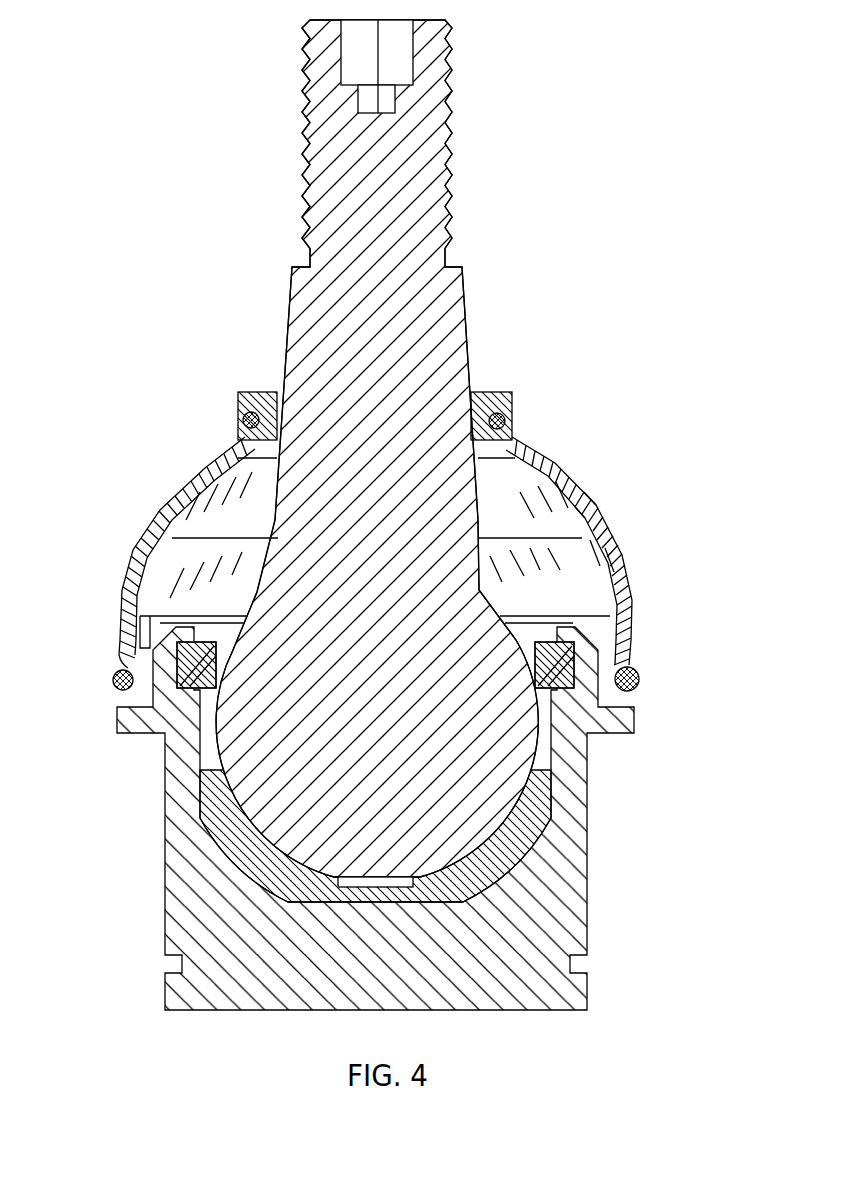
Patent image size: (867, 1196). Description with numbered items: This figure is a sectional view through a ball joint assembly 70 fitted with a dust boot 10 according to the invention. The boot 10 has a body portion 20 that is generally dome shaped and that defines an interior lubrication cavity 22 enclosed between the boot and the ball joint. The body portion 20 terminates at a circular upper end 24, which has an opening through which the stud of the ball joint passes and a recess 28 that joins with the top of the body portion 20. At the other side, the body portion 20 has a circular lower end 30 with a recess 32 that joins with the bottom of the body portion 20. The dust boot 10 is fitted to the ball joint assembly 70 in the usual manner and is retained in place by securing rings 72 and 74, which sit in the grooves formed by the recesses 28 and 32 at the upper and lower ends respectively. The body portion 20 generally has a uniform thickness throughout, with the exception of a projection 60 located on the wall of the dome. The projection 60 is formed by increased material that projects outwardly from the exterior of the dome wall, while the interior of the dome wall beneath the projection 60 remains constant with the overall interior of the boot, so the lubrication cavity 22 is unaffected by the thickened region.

The boot 10 is at (108, 621).
The body portion 20 is at (620, 547).
The interior lubrication cavity 22 is at (574, 522).
The circular upper end 24 is at (518, 403).
The recess 28 is at (505, 423).
The circular lower end 30 is at (650, 697).
The recess 32 is at (638, 674).
The projection 60 is at (560, 456).
The ball joint assembly 70 is at (158, 798).
The securing ring 72 is at (238, 413).
The securing ring 74 is at (112, 683).